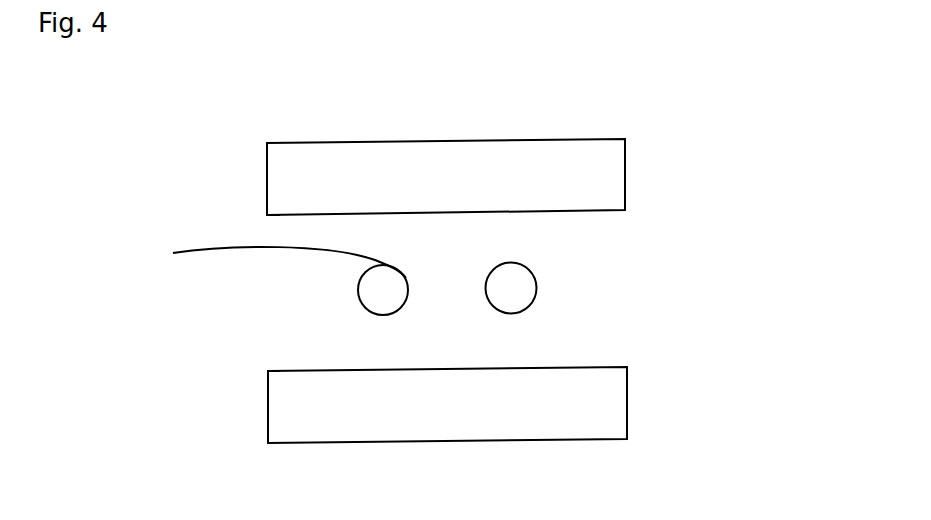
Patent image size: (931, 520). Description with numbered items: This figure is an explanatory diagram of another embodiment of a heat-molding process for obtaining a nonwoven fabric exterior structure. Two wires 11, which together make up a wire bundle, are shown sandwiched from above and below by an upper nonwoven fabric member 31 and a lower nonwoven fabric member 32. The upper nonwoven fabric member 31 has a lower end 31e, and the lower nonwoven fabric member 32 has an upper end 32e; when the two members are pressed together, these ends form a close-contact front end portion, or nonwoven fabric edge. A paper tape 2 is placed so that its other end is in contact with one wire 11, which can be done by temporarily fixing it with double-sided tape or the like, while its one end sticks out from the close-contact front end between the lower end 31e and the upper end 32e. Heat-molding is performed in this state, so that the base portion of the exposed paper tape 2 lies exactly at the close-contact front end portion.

The paper tape 2 is at (188, 253).
The wire 11 is at (358, 290).
The upper nonwoven fabric member 31 is at (582, 138).
The lower end of the upper nonwoven fabric member 31e is at (267, 215).
The lower nonwoven fabric member 32 is at (570, 440).
The upper end of the lower nonwoven fabric member 32e is at (268, 371).